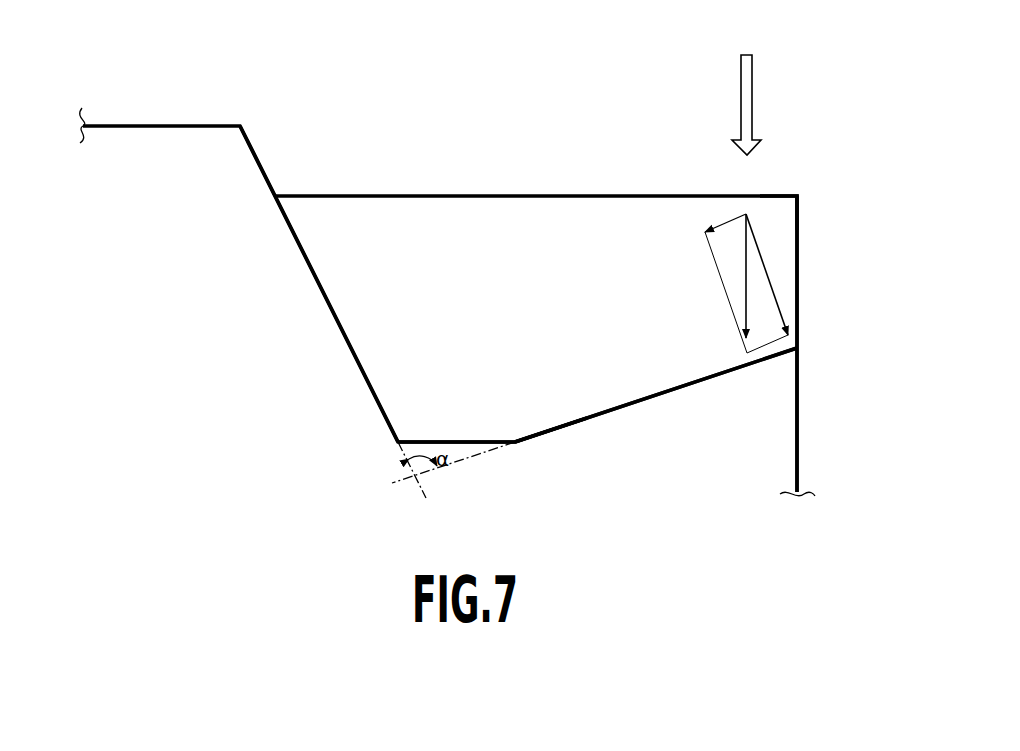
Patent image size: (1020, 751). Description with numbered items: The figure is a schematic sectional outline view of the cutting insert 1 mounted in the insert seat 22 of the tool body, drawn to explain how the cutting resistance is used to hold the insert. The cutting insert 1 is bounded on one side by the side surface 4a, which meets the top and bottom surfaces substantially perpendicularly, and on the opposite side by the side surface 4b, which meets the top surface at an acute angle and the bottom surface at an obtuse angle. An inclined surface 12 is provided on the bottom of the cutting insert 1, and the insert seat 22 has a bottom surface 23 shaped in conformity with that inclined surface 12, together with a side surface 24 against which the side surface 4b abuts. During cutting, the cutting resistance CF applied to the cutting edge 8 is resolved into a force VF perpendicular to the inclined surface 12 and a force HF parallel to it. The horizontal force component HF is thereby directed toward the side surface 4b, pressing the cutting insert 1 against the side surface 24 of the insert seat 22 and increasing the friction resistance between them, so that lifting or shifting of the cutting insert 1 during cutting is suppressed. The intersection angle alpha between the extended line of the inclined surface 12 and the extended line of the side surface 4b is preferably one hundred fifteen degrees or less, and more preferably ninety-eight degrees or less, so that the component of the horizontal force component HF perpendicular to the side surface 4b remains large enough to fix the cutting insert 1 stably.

The cutting insert 1 is at (455, 160).
The side surface of insert seat 24 is at (253, 151).
The side surface 4b is at (314, 277).
The side surface 4a is at (799, 230).
The major cutting edge 8 is at (798, 196).
The insert seat 22 is at (773, 432).
The bottom surface of insert seat 23 is at (668, 390).
The inclined surface 12 is at (587, 420).
The cutting resistance CF is at (746, 91).
The horizontal force component HF is at (720, 224).
The force perpendicular to inclined surface VF is at (771, 295).